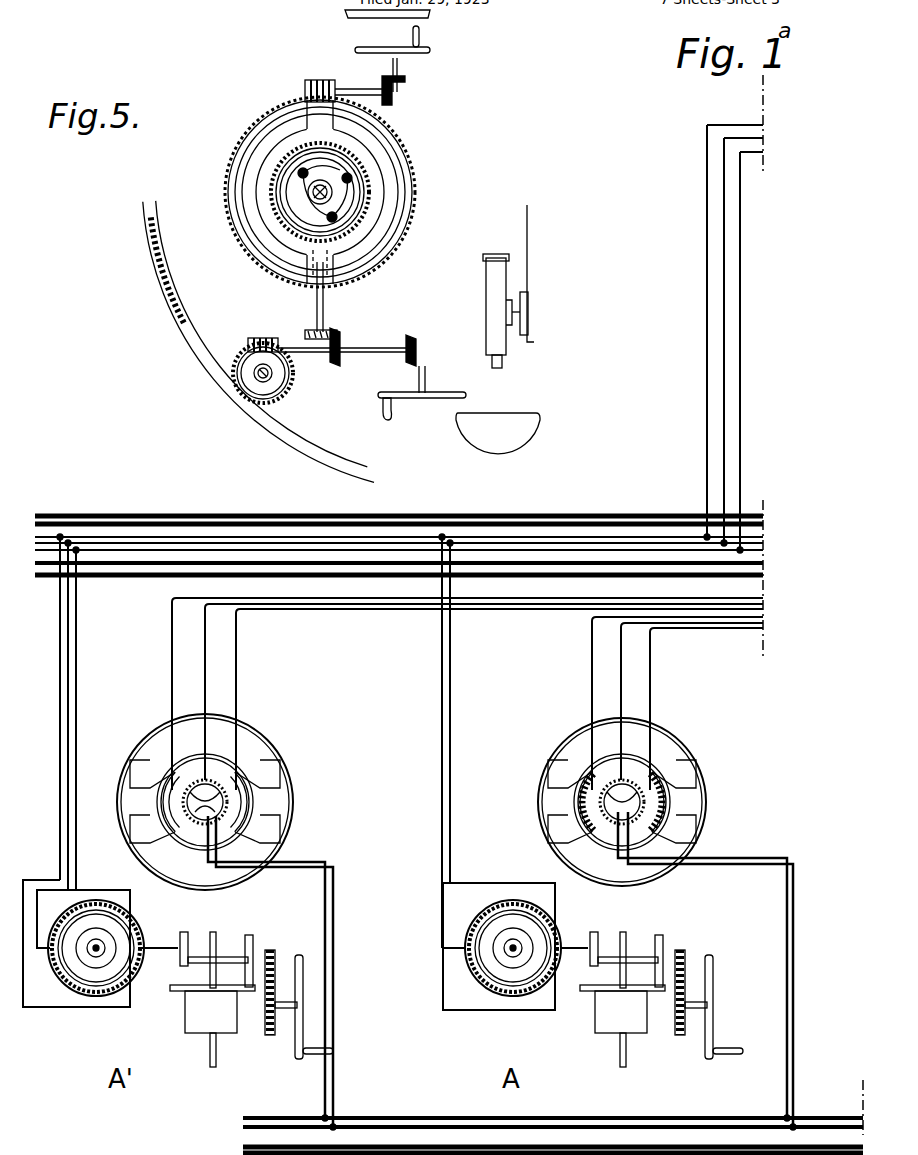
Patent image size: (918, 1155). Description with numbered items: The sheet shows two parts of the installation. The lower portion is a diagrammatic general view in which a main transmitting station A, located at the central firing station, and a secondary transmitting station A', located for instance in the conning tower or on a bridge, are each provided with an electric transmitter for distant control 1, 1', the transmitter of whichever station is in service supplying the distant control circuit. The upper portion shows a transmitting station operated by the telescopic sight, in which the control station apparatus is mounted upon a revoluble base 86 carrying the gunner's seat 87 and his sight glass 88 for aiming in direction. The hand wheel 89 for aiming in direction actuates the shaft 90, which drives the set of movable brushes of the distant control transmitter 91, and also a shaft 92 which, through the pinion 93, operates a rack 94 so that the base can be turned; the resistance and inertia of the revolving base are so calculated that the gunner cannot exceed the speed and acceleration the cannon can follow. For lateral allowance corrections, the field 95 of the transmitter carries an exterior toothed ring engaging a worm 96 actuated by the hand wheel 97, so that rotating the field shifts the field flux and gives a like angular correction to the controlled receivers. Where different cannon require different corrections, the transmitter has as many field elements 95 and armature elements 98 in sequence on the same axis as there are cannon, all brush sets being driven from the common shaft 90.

In FIG. 5, the revoluble base 86 is at (292, 427).
In FIG. 5, the gunner's seat 87 is at (515, 420).
In FIG. 5, the sight glass 88 is at (497, 295).
In FIG. 5, the hand wheel 89 is at (390, 423).
In FIG. 5, the shaft 90 is at (328, 313).
In FIG. 5, the distant control transmitter 91 is at (382, 205).
In FIG. 5, the shaft 92 is at (297, 352).
In FIG. 5, the pinion 93 is at (273, 382).
In FIG. 5, the rack 94 is at (166, 290).
In FIG. 5, the field 95 is at (318, 135).
In FIG. 5, the worm 96 is at (320, 83).
In FIG. 5, the hand wheel 97 is at (418, 32).
In FIG. 5, the armature element 98 is at (372, 177).
In FIG. 1A, the electric transmitter for distant control 1 is at (631, 788).
In FIG. 1A, the electric transmitter for distant control 1' is at (218, 790).
In FIG. 1A, the main transmitting station A is at (592, 975).
In FIG. 1A, the secondary transmitting station A' is at (178, 973).